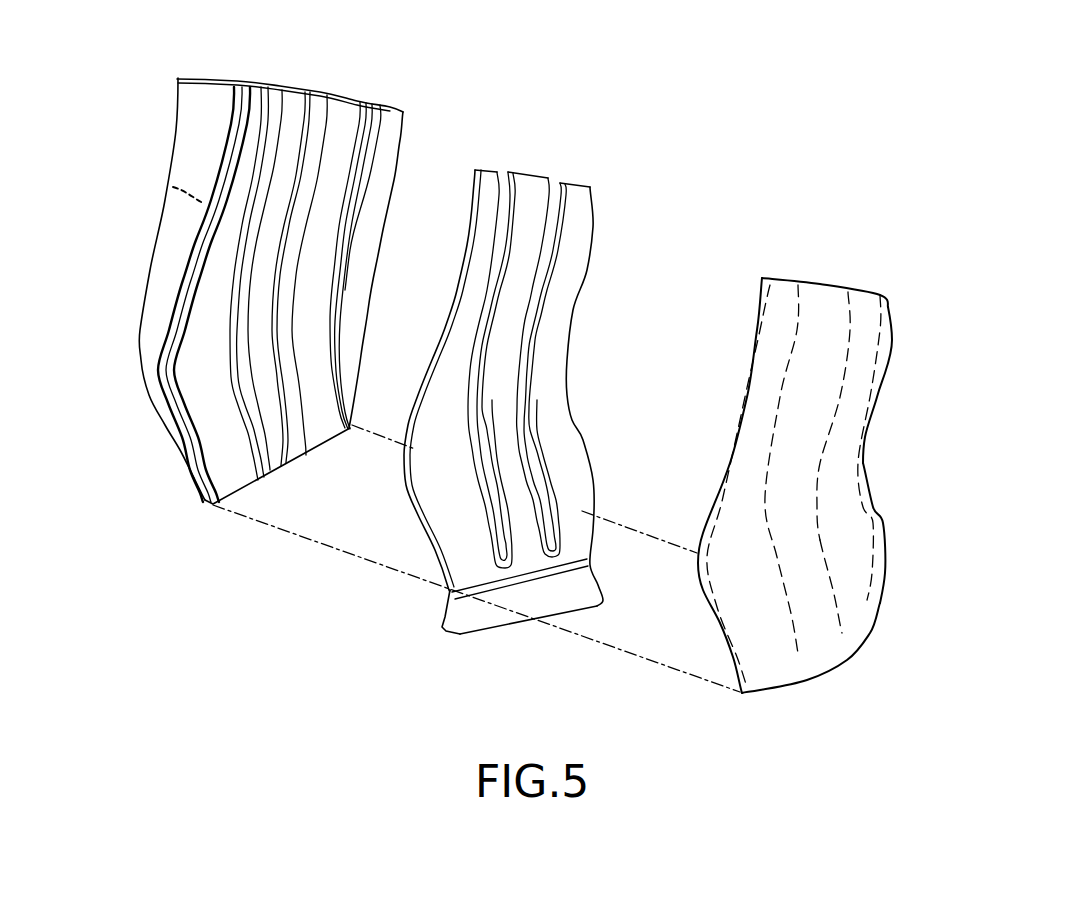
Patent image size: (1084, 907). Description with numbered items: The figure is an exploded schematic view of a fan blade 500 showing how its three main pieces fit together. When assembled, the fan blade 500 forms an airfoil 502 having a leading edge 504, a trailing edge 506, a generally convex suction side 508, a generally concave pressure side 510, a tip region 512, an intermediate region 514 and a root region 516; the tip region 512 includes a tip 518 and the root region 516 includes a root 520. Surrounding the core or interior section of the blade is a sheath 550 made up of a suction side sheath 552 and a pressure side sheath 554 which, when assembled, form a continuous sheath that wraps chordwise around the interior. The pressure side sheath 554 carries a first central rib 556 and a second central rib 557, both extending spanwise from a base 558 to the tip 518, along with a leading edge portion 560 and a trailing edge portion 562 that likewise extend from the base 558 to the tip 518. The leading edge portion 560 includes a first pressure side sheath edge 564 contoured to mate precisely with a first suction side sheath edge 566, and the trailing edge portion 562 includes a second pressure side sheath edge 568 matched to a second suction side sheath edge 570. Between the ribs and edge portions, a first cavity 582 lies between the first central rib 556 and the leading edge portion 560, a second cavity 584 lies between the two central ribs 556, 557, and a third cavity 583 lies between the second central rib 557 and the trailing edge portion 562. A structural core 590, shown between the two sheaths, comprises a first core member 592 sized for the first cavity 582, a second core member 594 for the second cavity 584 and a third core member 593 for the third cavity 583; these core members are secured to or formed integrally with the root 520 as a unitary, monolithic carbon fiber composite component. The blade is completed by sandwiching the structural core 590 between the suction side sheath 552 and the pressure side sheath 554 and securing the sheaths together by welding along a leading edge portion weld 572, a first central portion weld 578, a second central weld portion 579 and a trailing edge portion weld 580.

The fan blade 500 is at (165, 78).
The airfoil 502 is at (153, 467).
The leading edge 504 is at (145, 278).
The trailing edge 506 is at (373, 264).
The suction side 508 is at (835, 480).
The pressure side 510 is at (173, 187).
The tip region 512 is at (420, 118).
The intermediate region 514 is at (130, 308).
The root region 516 is at (422, 620).
The tip 518 is at (343, 97).
The root 520 is at (470, 638).
The sheath 550 is at (143, 403).
The suction side sheath 552 is at (880, 393).
The pressure side sheath 554 is at (150, 337).
The first central rib 556 is at (268, 473).
The second central rib 557 is at (310, 455).
The base 558 is at (253, 487).
The leading edge portion 560 is at (187, 250).
The trailing edge portion 562 is at (398, 165).
The first pressure side sheath edge 564 is at (232, 137).
The first suction side sheath edge 566 is at (703, 603).
The second pressure side sheath edge 568 is at (345, 216).
The second suction side sheath edge 570 is at (883, 525).
The leading edge portion weld 572 is at (710, 538).
The first central portion weld 578 is at (797, 657).
The second central weld portion 579 is at (843, 642).
The trailing edge portion weld 580 is at (873, 592).
The first cavity 582 is at (215, 373).
The third cavity 583 is at (338, 336).
The second cavity 584 is at (280, 362).
The structural core 590 is at (578, 357).
The first core member 592 is at (462, 300).
The third core member 593 is at (572, 475).
The second core member 594 is at (525, 547).